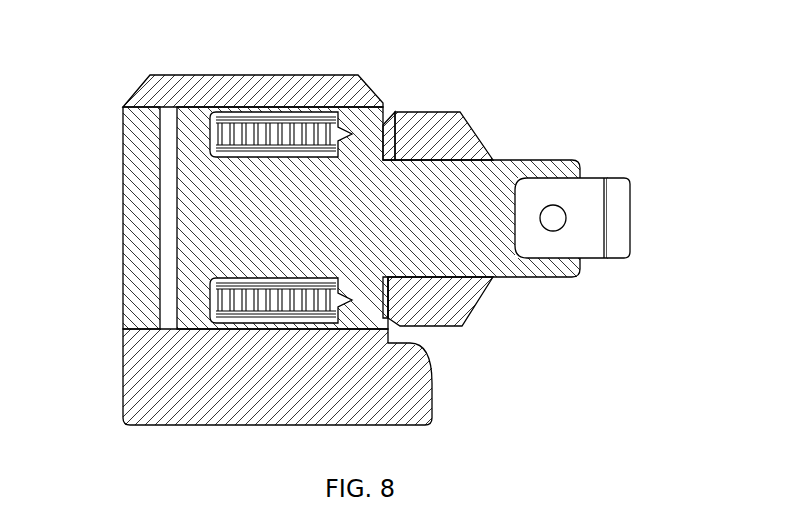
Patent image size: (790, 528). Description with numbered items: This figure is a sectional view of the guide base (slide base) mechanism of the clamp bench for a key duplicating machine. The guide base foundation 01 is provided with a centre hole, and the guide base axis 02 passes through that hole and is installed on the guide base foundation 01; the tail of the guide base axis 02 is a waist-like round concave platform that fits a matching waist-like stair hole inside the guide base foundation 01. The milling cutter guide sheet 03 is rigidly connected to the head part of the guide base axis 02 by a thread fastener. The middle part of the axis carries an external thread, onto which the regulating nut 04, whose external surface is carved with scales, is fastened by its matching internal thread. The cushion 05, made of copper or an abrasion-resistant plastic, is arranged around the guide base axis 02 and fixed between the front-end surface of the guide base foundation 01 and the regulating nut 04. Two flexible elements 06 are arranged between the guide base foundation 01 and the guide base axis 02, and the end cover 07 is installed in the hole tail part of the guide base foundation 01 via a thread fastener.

The guide base foundation 01 is at (373, 378).
The guide base axis 02 is at (462, 245).
The milling cutter guide sheet 03 is at (575, 245).
The regulating nut 04 is at (465, 135).
The cushion 05 is at (385, 135).
The flexible element 06 is at (283, 300).
The end cover 07 is at (133, 187).